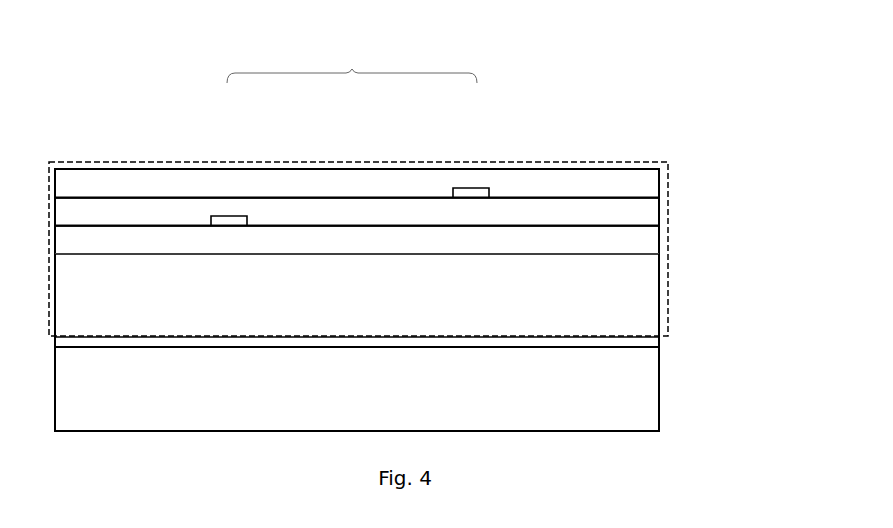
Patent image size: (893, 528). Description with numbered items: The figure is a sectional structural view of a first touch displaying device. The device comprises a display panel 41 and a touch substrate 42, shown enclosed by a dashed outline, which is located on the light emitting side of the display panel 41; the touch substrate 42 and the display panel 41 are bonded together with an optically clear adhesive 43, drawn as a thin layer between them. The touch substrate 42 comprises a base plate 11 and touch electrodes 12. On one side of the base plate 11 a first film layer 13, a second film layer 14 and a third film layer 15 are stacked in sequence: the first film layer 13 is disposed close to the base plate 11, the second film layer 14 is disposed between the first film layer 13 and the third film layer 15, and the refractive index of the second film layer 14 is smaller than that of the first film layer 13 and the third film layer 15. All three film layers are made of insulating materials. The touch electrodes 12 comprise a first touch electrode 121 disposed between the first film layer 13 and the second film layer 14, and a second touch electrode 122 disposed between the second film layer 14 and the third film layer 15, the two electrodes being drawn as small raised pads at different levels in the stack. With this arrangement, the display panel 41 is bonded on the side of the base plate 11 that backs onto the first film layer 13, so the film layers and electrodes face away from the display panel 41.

The touch electrodes 12 is at (352, 62).
The first touch electrode 121 is at (228, 222).
The second touch electrode 122 is at (472, 194).
The touch substrate 42 is at (571, 162).
The third film layer 15 is at (604, 182).
The second film layer 14 is at (604, 208).
The first film layer 13 is at (609, 236).
The base plate 11 is at (612, 292).
The optically clear adhesive 43 is at (611, 341).
The display panel 41 is at (612, 394).